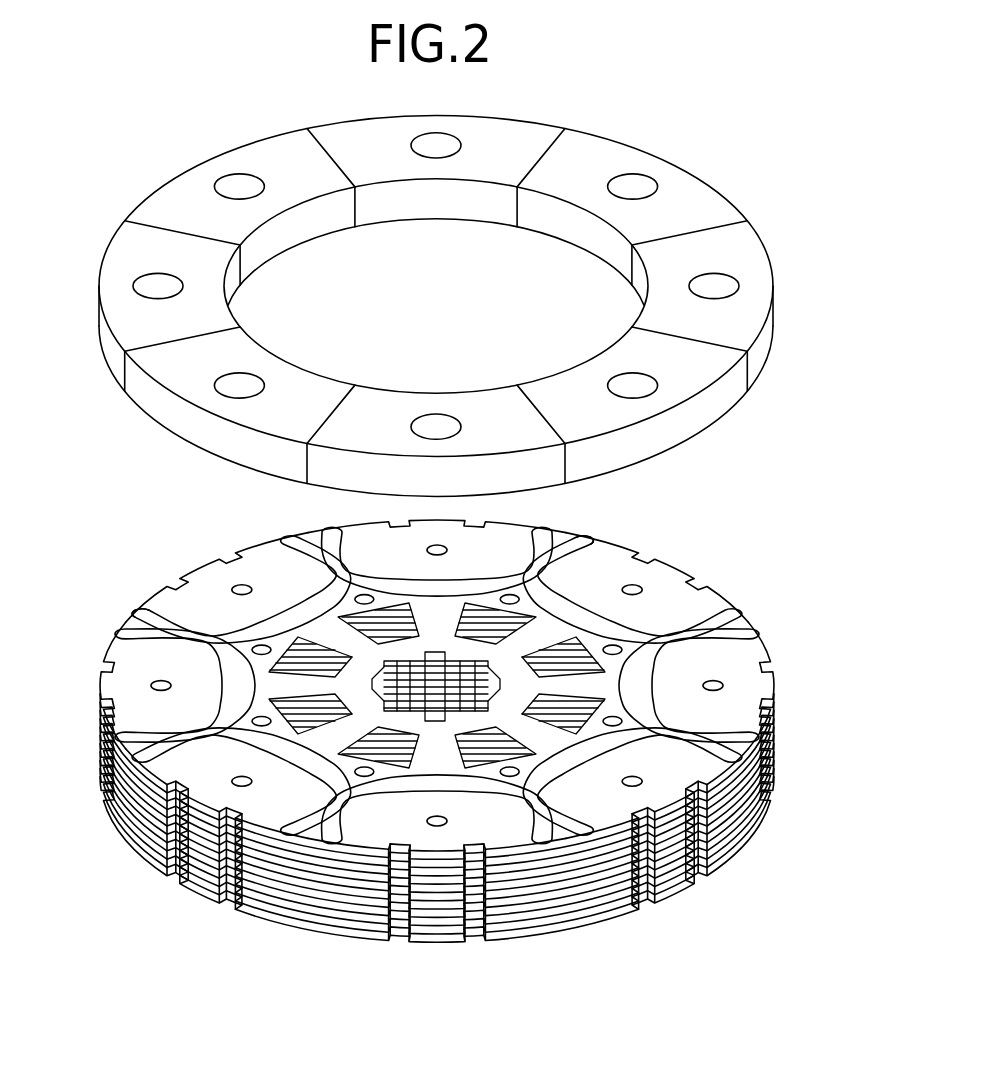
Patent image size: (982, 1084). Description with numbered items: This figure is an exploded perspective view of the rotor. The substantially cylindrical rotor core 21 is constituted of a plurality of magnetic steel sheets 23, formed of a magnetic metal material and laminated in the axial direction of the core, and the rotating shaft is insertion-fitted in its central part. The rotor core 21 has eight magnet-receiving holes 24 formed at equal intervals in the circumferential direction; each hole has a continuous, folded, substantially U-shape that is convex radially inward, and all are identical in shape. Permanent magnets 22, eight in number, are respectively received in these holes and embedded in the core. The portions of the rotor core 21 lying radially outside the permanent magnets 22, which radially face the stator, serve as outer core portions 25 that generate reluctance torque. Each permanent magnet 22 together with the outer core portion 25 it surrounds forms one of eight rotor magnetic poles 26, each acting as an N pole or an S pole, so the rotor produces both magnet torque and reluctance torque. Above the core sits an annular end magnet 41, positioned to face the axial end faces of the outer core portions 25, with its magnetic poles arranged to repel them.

The rotor core 21 is at (448, 745).
The permanent magnet 22 is at (193, 623).
The magnetic steel sheet 23 is at (367, 927).
The magnet-receiving hole 24 is at (140, 613).
The outer core portion 25 is at (637, 582).
The rotor magnetic pole 26 is at (777, 683).
The end magnet 41 is at (697, 163).